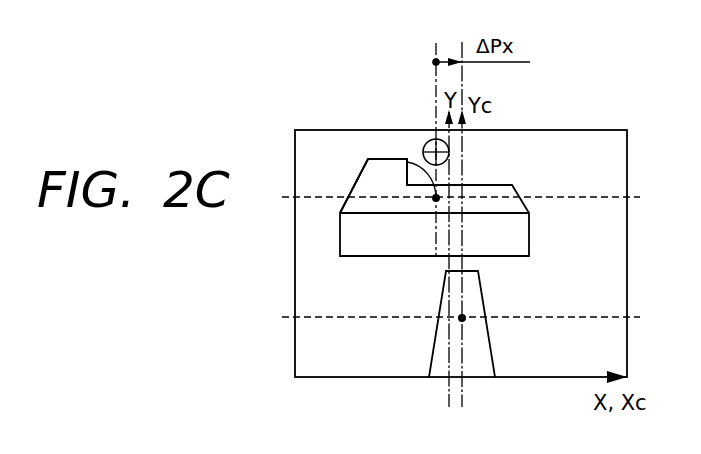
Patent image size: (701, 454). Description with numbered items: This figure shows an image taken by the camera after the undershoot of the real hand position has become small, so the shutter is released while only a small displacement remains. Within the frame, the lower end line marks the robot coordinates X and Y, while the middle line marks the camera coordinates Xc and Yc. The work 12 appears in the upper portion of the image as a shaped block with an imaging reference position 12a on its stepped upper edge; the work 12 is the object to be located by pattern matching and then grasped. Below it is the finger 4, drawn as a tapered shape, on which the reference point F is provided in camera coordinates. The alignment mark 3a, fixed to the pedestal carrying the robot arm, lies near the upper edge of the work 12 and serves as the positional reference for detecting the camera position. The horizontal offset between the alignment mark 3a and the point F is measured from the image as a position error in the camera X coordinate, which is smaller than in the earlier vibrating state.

The work 12 is at (503, 188).
The imaging reference position 12a is at (370, 166).
The alignment mark 3a is at (427, 140).
The finger 4 is at (477, 368).
The point F is at (464, 316).